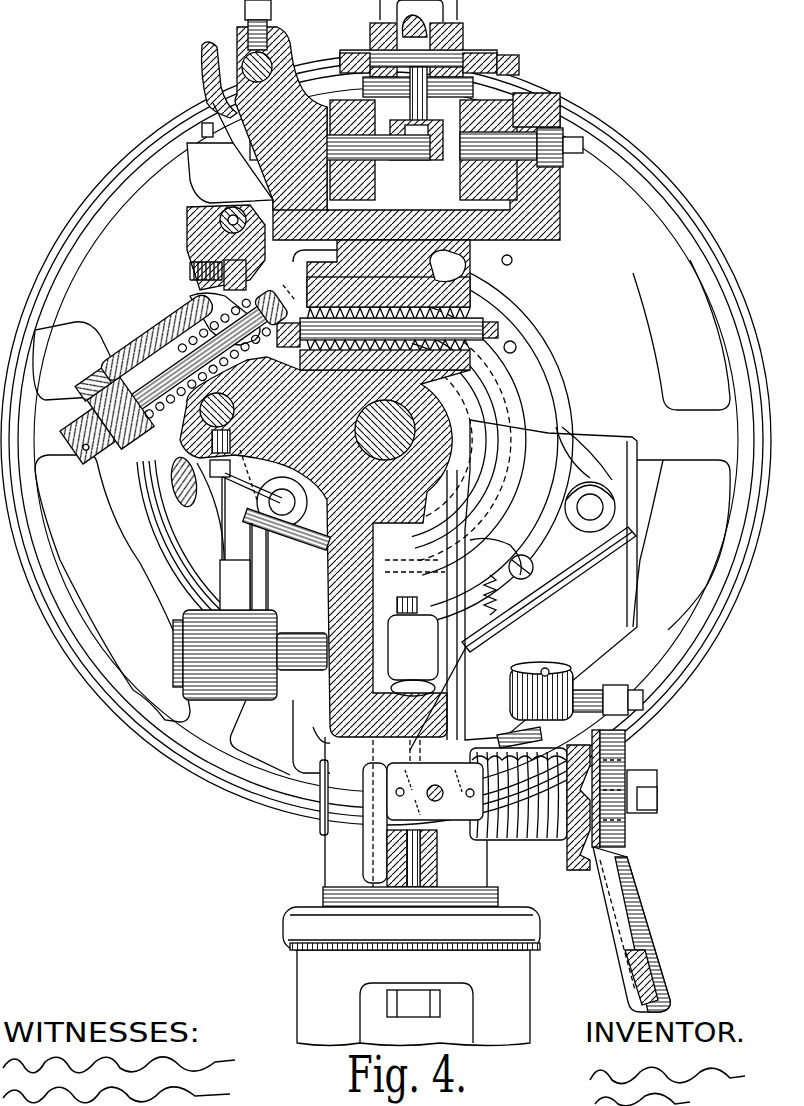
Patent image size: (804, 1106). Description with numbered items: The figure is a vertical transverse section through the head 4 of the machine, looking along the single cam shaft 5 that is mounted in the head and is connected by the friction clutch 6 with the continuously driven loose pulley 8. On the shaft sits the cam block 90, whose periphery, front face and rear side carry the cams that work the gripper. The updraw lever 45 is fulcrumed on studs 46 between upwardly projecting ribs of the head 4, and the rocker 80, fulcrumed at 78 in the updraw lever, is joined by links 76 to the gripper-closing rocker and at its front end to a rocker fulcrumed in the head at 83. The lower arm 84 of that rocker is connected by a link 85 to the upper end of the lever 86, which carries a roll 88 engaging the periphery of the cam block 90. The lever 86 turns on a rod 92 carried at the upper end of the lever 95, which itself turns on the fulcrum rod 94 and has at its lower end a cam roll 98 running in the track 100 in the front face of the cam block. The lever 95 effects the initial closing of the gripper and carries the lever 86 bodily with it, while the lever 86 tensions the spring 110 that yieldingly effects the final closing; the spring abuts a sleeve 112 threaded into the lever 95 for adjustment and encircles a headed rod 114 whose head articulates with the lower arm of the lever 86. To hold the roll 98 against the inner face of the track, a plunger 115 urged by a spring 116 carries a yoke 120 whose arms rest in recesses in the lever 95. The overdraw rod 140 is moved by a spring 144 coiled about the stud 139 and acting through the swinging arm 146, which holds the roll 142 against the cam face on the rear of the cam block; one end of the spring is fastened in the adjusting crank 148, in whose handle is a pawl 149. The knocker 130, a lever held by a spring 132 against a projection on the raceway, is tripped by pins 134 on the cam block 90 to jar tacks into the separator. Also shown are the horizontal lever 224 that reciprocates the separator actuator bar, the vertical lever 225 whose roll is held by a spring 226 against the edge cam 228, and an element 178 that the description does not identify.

The head 4 is at (562, 178).
The cam shaft 5 is at (420, 432).
The friction clutch 6 is at (560, 330).
The loose pulley 8 is at (733, 278).
The updraw lever 45 is at (500, 75).
The studs 46 is at (560, 118).
The links 76 is at (438, 162).
The pivot 78 is at (497, 83).
The rocker 80 is at (457, 8).
The fulcrum 83 is at (250, 60).
The lower arm 84 is at (232, 143).
The link 85 is at (205, 200).
The lever 86 is at (187, 220).
The roll 88 is at (160, 307).
The cam block 90 is at (288, 292).
The rod 92 is at (192, 257).
The fulcrum rod 94 is at (173, 457).
The lever 95 is at (190, 300).
The cam roll 98 is at (267, 543).
The cam track 100 is at (340, 573).
The spring 110 is at (135, 342).
The sleeve 112 is at (110, 388).
The headed rod 114 is at (147, 363).
The plunger 115 is at (490, 318).
The spring 116 is at (548, 330).
The yoke 120 is at (219, 285).
The knocker 130 is at (522, 530).
The spring 132 is at (523, 597).
The pins 134 is at (563, 320).
The stud 139 is at (657, 800).
The overdraw rod 140 is at (400, 585).
The roll 142 is at (485, 538).
The spring 144 is at (520, 842).
The swinging arm 146 is at (377, 735).
The adjusting crank 148 is at (658, 937).
The pawl 149 is at (620, 866).
The curved link 178 is at (230, 483).
The horizontal lever 224 is at (633, 733).
The vertical lever 225 is at (547, 420).
The spring 226 is at (483, 553).
The edge cam 228 is at (415, 655).